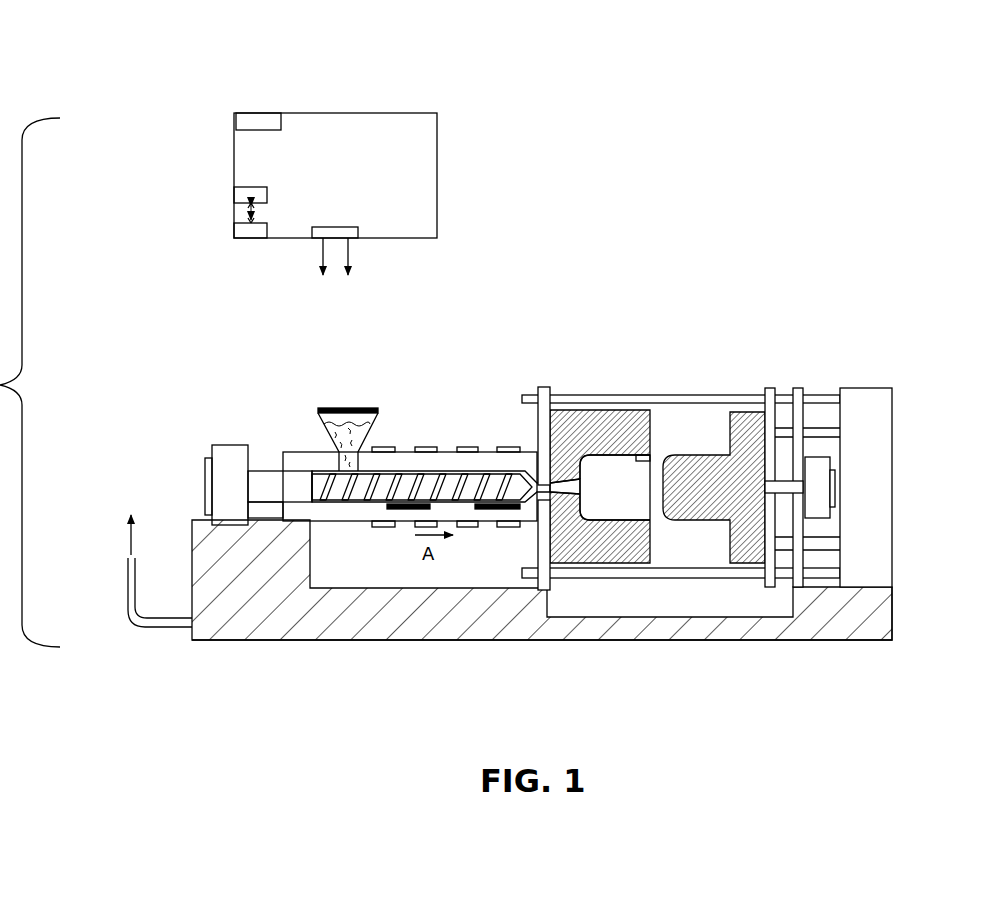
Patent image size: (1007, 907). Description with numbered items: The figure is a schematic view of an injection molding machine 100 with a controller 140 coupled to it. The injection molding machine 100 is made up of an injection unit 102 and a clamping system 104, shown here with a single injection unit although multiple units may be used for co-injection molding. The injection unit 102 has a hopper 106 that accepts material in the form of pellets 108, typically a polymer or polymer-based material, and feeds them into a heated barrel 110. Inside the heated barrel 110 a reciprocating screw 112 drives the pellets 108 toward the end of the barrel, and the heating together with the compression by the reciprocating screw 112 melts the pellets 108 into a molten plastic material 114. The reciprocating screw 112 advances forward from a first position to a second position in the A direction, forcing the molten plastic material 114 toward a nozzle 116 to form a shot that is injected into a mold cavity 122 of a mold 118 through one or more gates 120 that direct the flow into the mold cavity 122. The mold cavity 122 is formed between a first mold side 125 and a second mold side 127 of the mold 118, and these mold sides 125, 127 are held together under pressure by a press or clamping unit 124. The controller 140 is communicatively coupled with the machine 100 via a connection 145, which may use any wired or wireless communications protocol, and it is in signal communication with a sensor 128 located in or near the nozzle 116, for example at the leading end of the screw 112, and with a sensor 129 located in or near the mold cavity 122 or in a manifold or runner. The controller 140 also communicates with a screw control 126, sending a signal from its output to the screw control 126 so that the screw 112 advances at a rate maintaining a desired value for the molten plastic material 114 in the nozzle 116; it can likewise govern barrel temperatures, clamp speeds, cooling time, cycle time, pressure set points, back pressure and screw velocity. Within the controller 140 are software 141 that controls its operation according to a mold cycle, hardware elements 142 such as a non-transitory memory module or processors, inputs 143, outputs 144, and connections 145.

The injection molding machine 100 is at (588, 192).
The injection unit 102 is at (392, 553).
The clamping system 104 is at (670, 652).
The hopper 106 is at (322, 411).
The pellets 108 is at (327, 425).
The heated barrel 110 is at (407, 449).
The reciprocating screw 112 is at (422, 469).
The molten plastic material 114 is at (448, 473).
The nozzle 116 is at (553, 412).
The mold 118 is at (654, 401).
The gate 120 is at (573, 480).
The mold cavity 122 is at (618, 467).
The clamping unit 124 is at (847, 378).
The first mold side 125 is at (600, 553).
The screw control 126 is at (225, 470).
The second mold side 127 is at (717, 517).
The sensor 128 is at (537, 479).
The sensor 129 is at (652, 456).
The controller 140 is at (395, 113).
The software 141 is at (234, 195).
The hardware elements 142 is at (234, 232).
The inputs 143 is at (237, 121).
The outputs 144 is at (356, 238).
The connection 145 is at (318, 256).